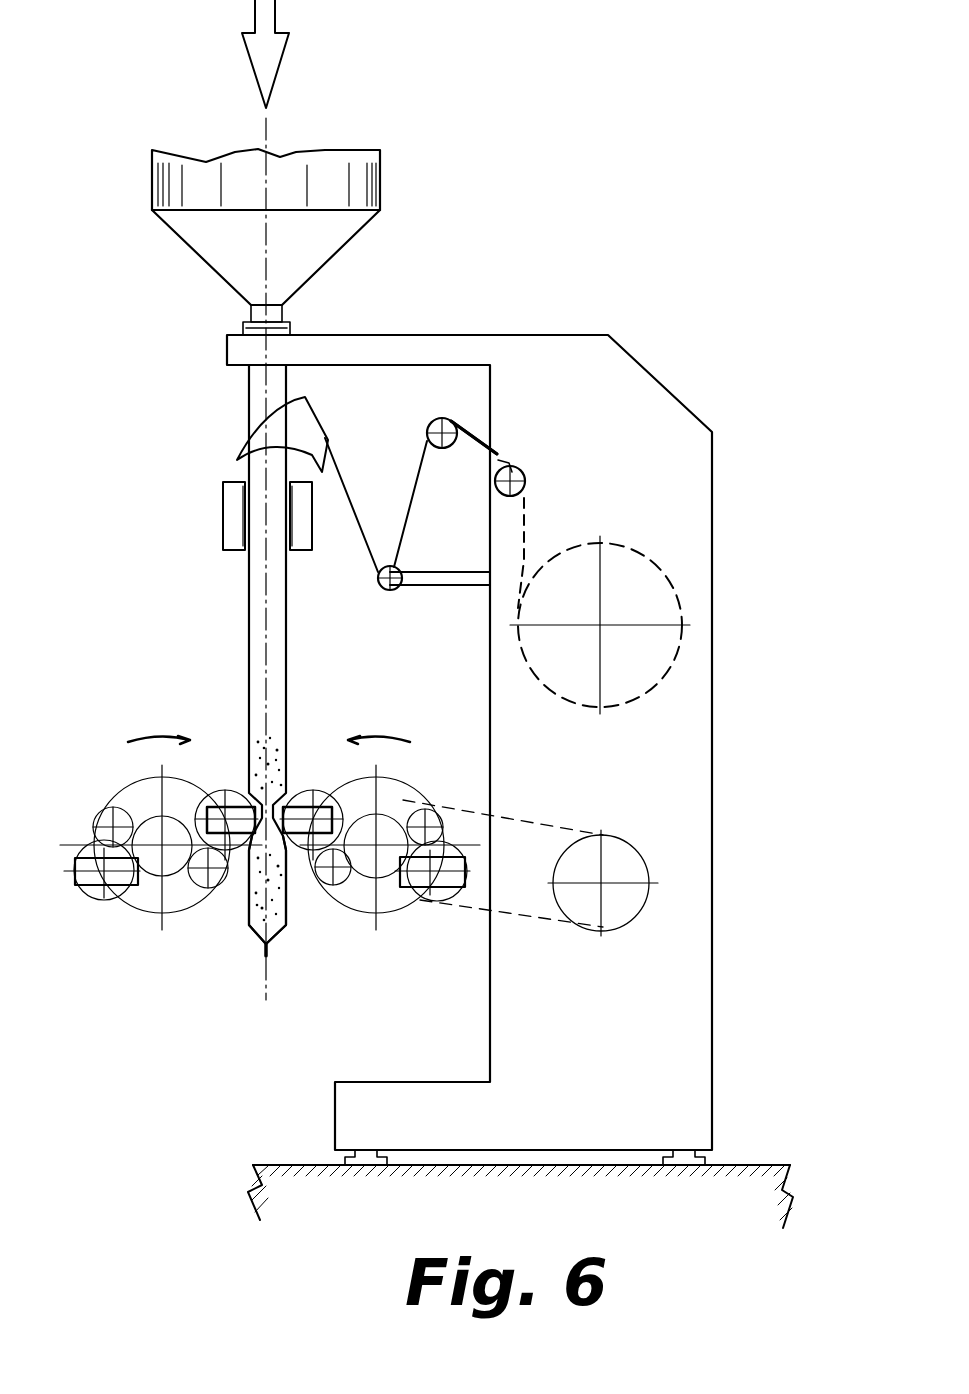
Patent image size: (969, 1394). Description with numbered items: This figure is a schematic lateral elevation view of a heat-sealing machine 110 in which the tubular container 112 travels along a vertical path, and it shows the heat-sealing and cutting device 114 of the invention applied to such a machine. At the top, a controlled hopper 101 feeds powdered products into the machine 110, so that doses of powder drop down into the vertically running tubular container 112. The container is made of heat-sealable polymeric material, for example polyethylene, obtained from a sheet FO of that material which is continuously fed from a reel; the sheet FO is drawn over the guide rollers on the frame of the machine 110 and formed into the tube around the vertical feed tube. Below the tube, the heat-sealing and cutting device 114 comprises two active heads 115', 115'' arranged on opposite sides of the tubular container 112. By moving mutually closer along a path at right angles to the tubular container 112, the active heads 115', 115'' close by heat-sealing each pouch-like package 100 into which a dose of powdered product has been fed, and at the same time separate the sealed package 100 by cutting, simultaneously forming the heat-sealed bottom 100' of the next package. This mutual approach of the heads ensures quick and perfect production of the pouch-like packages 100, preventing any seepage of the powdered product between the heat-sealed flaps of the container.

The controlled hopper 101 is at (320, 252).
The heat-sealing machine 110 is at (772, 500).
The tubular container 112 is at (291, 602).
The heat-sealing and cutting device 114 is at (212, 924).
The active head 115' is at (217, 761).
The active head 115'' is at (335, 761).
The heat-sealed pouch-like package 100 is at (316, 901).
The heat-sealed bottom 100' is at (319, 991).
The sheet of heat-sealable material FO is at (478, 422).